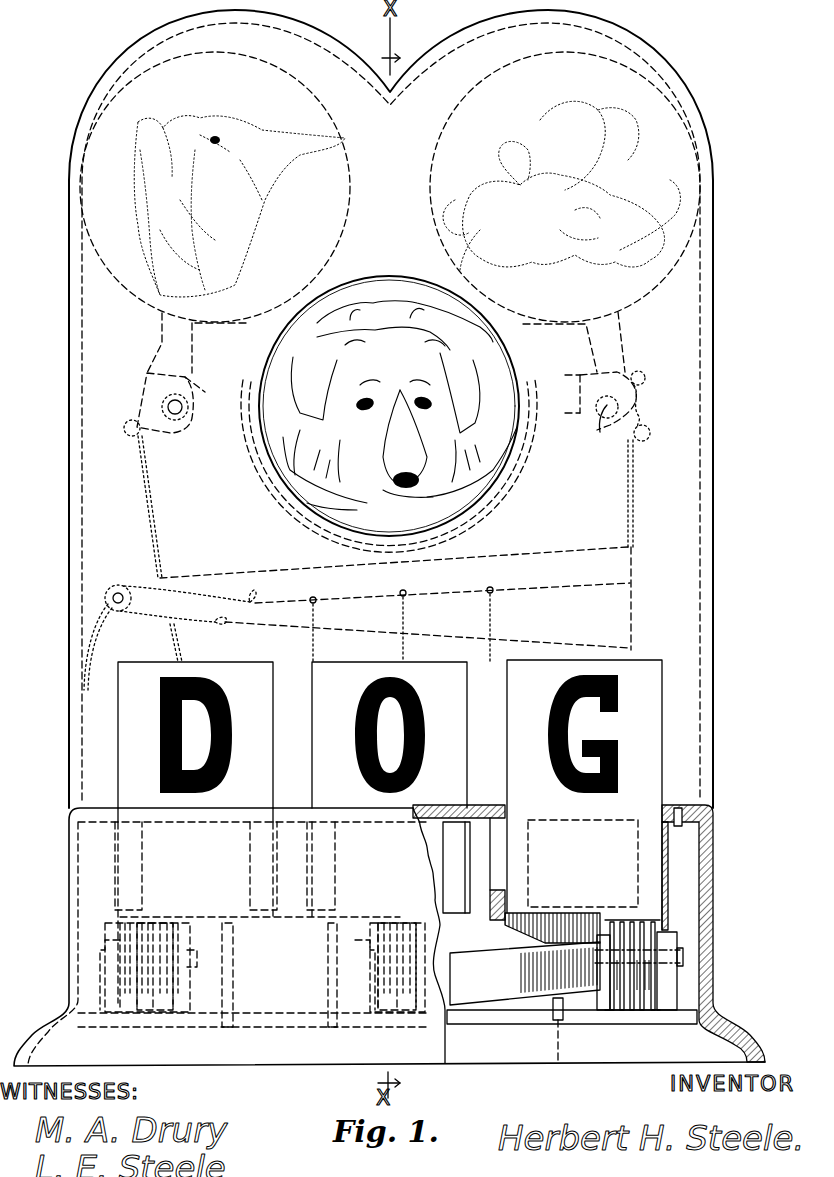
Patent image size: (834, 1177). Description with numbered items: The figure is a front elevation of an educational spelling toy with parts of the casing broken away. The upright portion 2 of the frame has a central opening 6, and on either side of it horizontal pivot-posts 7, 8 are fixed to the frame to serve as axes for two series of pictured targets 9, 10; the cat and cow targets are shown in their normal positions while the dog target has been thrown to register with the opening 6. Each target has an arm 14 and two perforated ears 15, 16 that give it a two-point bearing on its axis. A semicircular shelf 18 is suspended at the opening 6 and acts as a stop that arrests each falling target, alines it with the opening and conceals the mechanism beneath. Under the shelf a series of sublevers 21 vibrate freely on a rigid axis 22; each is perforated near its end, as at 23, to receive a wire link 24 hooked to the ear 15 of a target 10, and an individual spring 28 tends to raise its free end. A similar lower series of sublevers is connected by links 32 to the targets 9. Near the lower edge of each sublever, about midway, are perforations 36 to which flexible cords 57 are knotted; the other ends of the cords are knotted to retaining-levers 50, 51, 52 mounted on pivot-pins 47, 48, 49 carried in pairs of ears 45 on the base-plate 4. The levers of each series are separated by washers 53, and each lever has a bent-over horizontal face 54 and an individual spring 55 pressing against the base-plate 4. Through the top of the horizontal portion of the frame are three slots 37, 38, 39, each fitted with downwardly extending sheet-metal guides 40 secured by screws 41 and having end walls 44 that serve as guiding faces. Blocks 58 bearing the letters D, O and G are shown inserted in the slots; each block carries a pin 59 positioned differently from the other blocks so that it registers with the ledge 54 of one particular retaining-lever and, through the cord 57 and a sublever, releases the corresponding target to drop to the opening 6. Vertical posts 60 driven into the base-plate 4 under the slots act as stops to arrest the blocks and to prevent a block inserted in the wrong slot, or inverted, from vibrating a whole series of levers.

The upright portion 2 is at (391, 409).
The bottom plate 4 is at (510, 1026).
The central opening 6 is at (390, 280).
The pivot-post 7 is at (182, 400).
The pivot-post 8 is at (602, 420).
The series of targets 9 is at (136, 300).
The series of targets 10 is at (448, 135).
The arm 14 is at (160, 344).
The perforated ear 15 is at (132, 420).
The perforated ear 16 is at (190, 418).
The semicircular shelf 18 is at (518, 462).
The sublevers 21 is at (550, 560).
The rigid axis 22 is at (118, 592).
The perforation 23 is at (632, 607).
The wire link 24 is at (636, 493).
The spring 28 is at (88, 630).
The link 32 is at (160, 530).
The perforations 36 is at (491, 592).
The slot 37 is at (248, 800).
The slot 38 is at (452, 806).
The slot 39 is at (673, 805).
The guides 40 is at (128, 866).
The screws 41 is at (678, 826).
The end wall 44 is at (490, 870).
The ears 45 is at (110, 995).
The pivot-pin 47 is at (100, 955).
The pivot-pin 48 is at (355, 958).
The pivot-pin 49 is at (684, 956).
The retaining-levers 50 is at (152, 995).
The retaining-levers 51 is at (397, 1000).
The retaining-levers 52 is at (492, 962).
The washers 53 is at (648, 945).
The horizontal face 54 is at (640, 925).
The spring 55 is at (652, 1010).
The flexible cord 57 is at (317, 645).
The blocks 58 is at (316, 685).
The pin 59 is at (655, 923).
The vertical post 60 is at (233, 944).